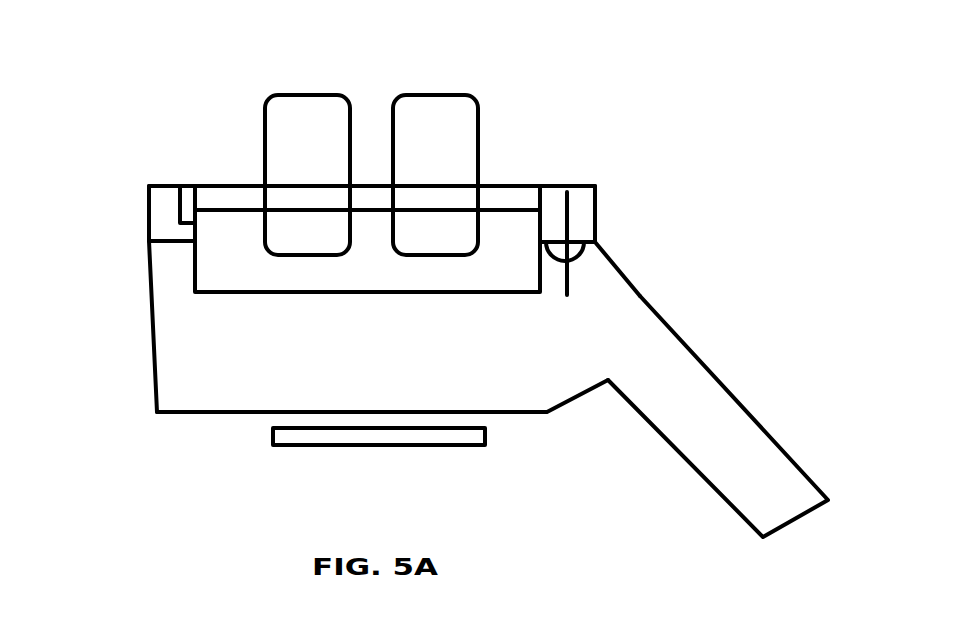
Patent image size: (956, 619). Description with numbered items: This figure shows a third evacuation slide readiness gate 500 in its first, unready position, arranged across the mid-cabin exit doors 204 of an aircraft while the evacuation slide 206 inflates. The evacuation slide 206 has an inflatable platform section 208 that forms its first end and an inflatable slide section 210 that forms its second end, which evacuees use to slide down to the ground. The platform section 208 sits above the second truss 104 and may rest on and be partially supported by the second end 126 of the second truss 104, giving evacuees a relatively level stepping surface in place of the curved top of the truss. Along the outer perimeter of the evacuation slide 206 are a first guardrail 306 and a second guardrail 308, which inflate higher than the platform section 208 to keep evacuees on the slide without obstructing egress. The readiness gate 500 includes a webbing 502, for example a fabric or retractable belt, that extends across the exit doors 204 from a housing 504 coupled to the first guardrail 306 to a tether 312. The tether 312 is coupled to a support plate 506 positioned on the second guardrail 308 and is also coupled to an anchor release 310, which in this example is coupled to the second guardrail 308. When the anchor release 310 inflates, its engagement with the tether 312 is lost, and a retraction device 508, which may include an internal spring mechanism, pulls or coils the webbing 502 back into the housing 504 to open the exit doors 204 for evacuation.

The third evacuation slide readiness gate 500 is at (578, 133).
The mid-cabin exit doors 204 is at (287, 95).
The webbing 502 is at (233, 186).
The retraction device 508 is at (185, 193).
The housing 504 is at (149, 217).
The first guardrail 306 is at (150, 283).
The evacuation slide 206 is at (188, 407).
The platform section 208 is at (434, 271).
The second truss 104 is at (306, 464).
The second end of the second truss 126 is at (308, 445).
The support plate 506 is at (578, 193).
The first tether 312 is at (570, 212).
The anchor release 310 is at (558, 263).
The second guardrail 308 is at (598, 267).
The slide section 210 is at (673, 367).